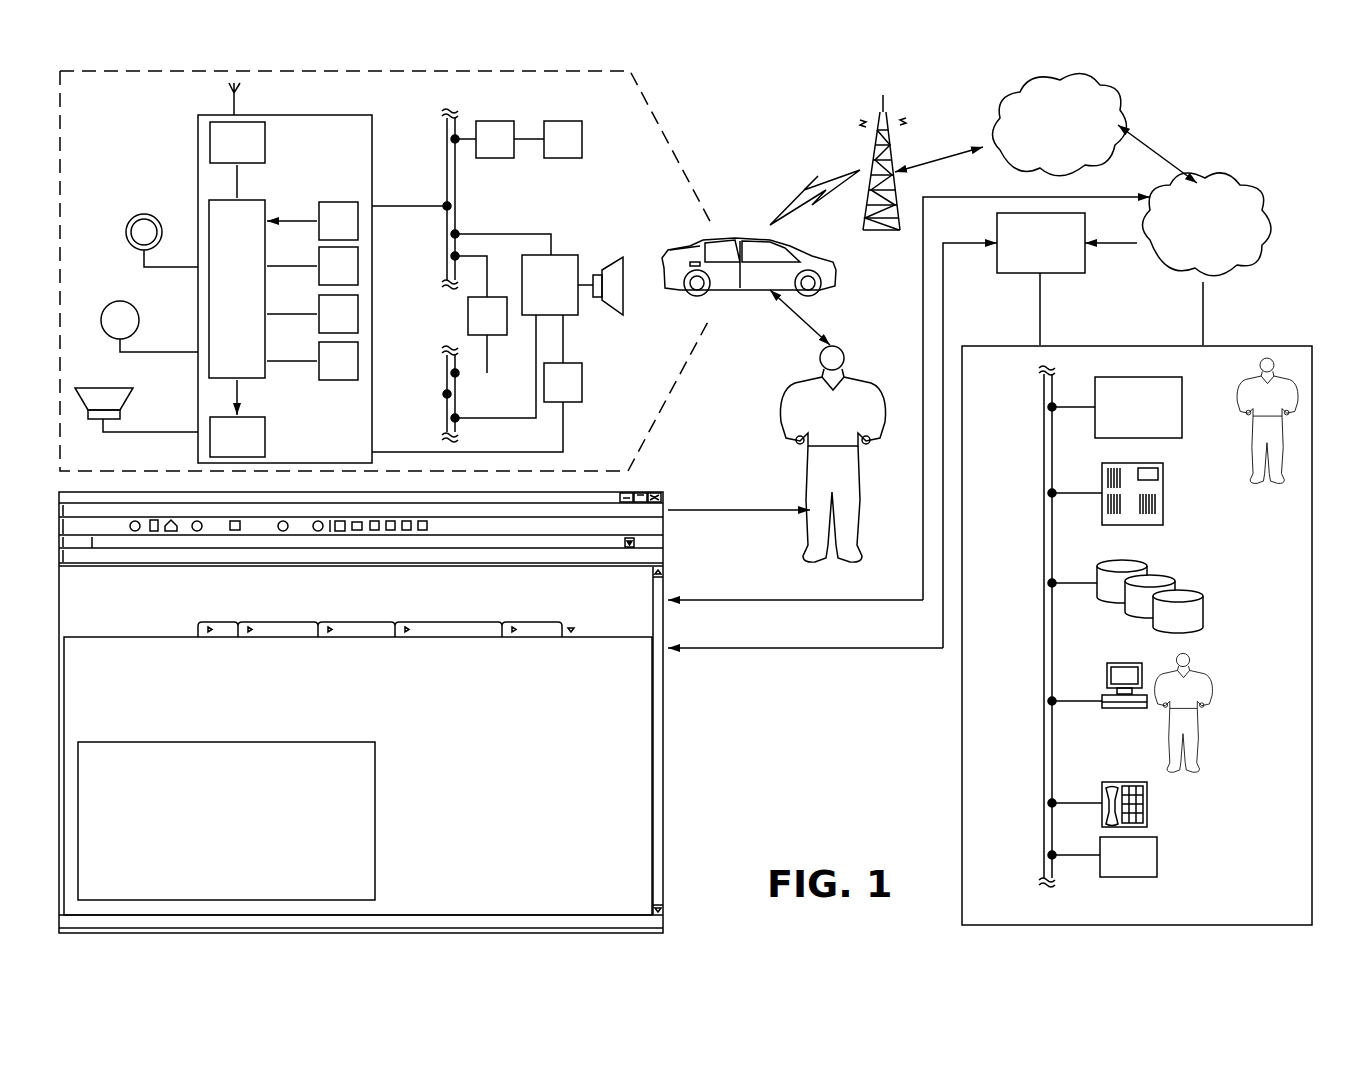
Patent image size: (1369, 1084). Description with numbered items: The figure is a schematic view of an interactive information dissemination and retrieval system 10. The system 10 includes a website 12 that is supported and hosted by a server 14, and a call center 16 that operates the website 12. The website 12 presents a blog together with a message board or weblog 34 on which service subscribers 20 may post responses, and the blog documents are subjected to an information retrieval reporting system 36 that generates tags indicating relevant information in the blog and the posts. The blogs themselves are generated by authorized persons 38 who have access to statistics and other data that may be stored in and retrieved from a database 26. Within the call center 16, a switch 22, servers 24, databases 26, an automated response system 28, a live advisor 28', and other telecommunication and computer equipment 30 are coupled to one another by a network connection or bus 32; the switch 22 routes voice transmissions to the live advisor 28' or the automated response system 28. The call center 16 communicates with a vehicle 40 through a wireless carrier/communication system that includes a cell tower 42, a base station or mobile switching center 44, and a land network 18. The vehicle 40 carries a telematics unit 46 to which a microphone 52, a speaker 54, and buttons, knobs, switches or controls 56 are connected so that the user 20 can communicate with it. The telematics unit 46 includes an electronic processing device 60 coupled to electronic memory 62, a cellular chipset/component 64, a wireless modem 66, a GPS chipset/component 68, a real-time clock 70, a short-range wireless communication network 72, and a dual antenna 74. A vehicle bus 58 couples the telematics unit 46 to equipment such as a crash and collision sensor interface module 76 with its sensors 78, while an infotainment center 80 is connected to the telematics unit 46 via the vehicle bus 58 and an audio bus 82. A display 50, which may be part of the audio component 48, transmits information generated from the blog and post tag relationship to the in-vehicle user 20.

The interactive information dissemination and retrieval system 10 is at (1250, 126).
The website 12 is at (663, 768).
The server 14 is at (1041, 243).
The call center 16 is at (962, 800).
The land network 18 is at (1207, 224).
The service subscriber 20 is at (810, 473).
The switch 22 is at (1138, 407).
The server 24 is at (1163, 512).
The database 26 is at (1205, 605).
The automated response system 28 is at (1105, 706).
The live advisor 28' is at (1221, 712).
The telecommunication and computer equipment 30 is at (1147, 803).
The network connection or bus 32 is at (1044, 445).
The message board or weblog 34 is at (375, 818).
The information retrieval reporting system 36 is at (1128, 857).
The authorized person 38 is at (1292, 428).
The vehicle 40 is at (736, 238).
The cell tower 42 is at (872, 157).
The base station and/or mobile switching center 44 is at (1060, 125).
The telematics unit 46 is at (373, 183).
The audio component 48 is at (572, 285).
The display 50 is at (477, 383).
The microphone 52 is at (120, 300).
The speaker 54 is at (128, 400).
The buttons, knobs, switches, keyboards, and/or controls 56 is at (144, 214).
The vehicle bus 58 is at (455, 192).
The electronic processing device 60 is at (237, 289).
The electronic memory 62 is at (237, 437).
The cellular chipset/component 64 is at (338, 221).
The wireless modem 66 is at (338, 266).
The GPS chipset/component 68 is at (338, 314).
The real-time clock 70 is at (338, 361).
The short-range wireless communication network 72 is at (237, 142).
The dual antenna 74 is at (238, 92).
The crash and/or collision sensor interface module 76 is at (495, 139).
The sensor 78 is at (548, 139).
The infotainment center 80 is at (487, 335).
The audio bus 82 is at (447, 404).